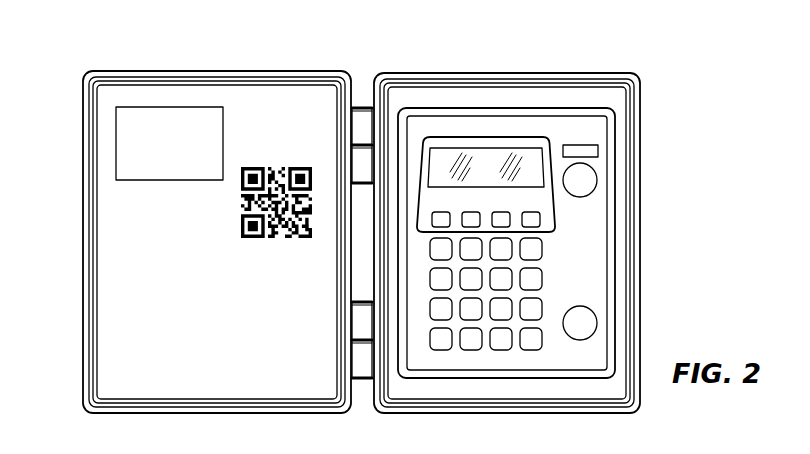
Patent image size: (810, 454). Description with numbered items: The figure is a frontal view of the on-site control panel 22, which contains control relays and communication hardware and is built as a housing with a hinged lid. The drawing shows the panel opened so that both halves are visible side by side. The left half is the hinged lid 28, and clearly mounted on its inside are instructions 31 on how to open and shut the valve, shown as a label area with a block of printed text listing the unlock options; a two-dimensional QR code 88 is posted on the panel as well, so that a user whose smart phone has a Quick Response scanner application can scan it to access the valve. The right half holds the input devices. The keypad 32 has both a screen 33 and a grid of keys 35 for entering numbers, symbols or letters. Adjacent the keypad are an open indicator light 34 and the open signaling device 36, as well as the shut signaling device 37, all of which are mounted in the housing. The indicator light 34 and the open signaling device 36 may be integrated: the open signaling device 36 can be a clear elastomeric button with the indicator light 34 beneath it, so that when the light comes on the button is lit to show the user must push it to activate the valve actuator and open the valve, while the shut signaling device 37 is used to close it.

The control panel 22 is at (206, 52).
The door 28 is at (160, 71).
The instructions 31 is at (120, 204).
The QR code 88 is at (240, 208).
The keypad 32 is at (498, 126).
The screen 33 is at (460, 142).
The open indicator light 34 is at (598, 151).
The keys 35 is at (540, 279).
The open signaling device 36 is at (597, 181).
The shut signaling device 37 is at (597, 323).